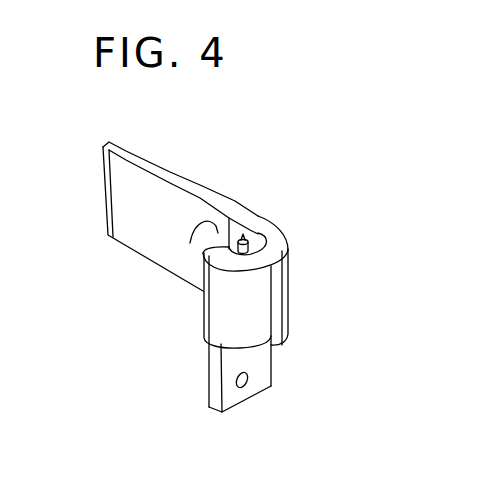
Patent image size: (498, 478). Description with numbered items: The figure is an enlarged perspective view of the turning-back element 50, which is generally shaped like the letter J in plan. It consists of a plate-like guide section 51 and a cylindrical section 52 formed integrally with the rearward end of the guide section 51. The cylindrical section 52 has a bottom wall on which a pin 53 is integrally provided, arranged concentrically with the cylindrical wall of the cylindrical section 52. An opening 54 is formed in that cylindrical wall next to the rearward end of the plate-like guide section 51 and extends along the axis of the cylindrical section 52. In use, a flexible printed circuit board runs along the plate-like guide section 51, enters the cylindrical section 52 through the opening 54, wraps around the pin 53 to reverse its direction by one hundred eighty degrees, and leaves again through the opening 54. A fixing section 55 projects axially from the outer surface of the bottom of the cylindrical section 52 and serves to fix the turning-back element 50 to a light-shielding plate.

The turning-back element 50 is at (211, 176).
The plate-like guide section 51 is at (144, 158).
The cylindrical section 52 is at (288, 243).
The pin 53 is at (244, 236).
The opening 54 is at (190, 243).
The fixing section 55 is at (230, 393).